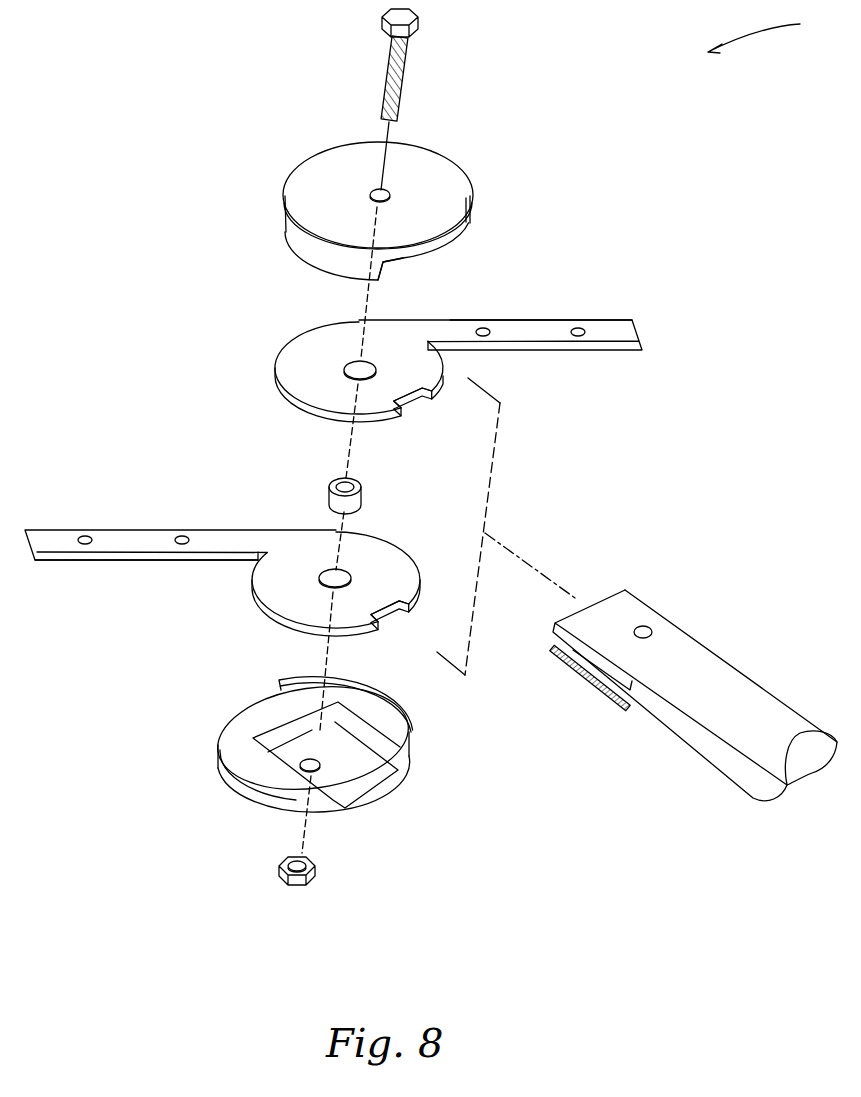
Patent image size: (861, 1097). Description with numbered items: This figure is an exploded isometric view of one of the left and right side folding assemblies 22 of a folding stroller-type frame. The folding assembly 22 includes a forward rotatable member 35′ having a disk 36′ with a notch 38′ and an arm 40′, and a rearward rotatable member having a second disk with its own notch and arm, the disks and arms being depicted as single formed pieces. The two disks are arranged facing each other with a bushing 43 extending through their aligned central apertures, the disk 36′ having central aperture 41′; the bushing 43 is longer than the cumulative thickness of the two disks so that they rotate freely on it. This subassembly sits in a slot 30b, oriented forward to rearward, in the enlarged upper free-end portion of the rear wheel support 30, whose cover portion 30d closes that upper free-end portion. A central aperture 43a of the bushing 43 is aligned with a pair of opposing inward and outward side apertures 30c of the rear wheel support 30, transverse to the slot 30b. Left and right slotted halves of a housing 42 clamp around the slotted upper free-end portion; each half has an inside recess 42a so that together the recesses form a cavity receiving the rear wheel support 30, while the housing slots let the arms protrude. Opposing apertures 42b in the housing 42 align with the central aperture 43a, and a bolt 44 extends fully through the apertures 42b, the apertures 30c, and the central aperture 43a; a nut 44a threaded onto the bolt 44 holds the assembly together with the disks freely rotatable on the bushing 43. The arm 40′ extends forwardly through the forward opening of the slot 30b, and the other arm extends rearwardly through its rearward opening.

The folding assembly 22 is at (767, 33).
The bolt 44 is at (383, 68).
The housing 42 is at (285, 202).
The recess 42a is at (432, 250).
The opposing apertures 42b is at (390, 190).
The disk 36′ is at (278, 347).
The central aperture 41′ is at (352, 362).
The notch 38′ is at (410, 417).
The arm 40′ is at (610, 330).
The forward rotatable member 35′ is at (560, 320).
The bushing 43 is at (356, 500).
The central aperture 43a is at (332, 480).
The rear wheel support 30 is at (688, 652).
The cover portion 30d is at (737, 685).
The side apertures 30c is at (643, 626).
The slot 30b is at (575, 668).
The nut 44a is at (318, 880).